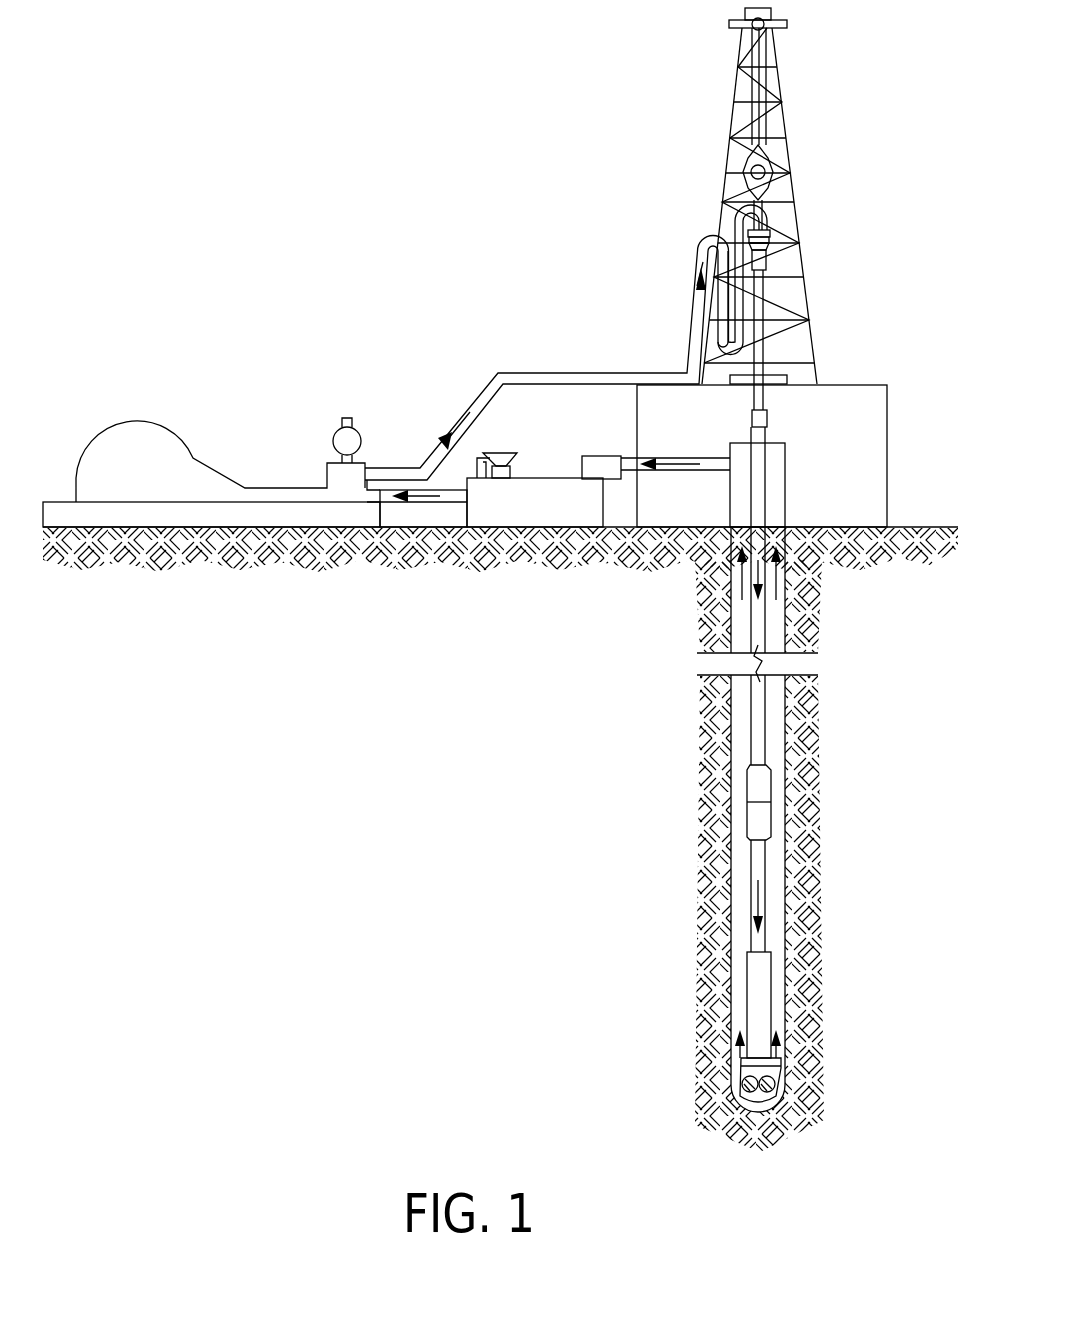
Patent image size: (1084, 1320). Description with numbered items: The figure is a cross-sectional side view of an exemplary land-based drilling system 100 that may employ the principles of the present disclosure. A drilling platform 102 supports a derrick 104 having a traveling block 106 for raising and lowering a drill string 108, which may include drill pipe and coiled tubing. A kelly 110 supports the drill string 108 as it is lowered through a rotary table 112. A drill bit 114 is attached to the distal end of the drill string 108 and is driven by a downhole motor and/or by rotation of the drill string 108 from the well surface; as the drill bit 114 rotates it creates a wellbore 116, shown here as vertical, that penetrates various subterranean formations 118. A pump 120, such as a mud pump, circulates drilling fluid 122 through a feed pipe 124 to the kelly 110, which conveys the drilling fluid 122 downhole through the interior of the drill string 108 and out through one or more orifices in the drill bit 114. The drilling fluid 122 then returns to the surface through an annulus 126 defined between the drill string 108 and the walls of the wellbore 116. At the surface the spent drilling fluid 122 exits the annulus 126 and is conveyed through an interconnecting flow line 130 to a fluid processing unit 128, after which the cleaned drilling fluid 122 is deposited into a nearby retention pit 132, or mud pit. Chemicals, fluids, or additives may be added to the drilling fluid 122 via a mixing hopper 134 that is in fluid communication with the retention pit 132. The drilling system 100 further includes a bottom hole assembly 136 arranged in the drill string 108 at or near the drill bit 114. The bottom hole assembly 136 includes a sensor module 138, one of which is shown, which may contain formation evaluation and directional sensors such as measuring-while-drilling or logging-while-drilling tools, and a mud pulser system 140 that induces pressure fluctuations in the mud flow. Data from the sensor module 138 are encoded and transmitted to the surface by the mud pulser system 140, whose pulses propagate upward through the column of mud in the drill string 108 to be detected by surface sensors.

The drilling system 100 is at (561, 128).
The drilling platform 102 is at (889, 406).
The derrick 104 is at (795, 110).
The traveling block 106 is at (775, 160).
The drill string 108 is at (761, 629).
The kelly 110 is at (764, 290).
The rotary table 112 is at (790, 381).
The drill bit 114 is at (781, 1082).
The wellbore 116 is at (789, 718).
The subterranean formations 118 is at (565, 727).
The pump 120 is at (155, 470).
The drilling fluid 122 is at (396, 468).
The feed pipe 124 is at (524, 372).
The annulus 126 is at (777, 874).
The fluid processing unit 128 is at (604, 456).
The flow line 130 is at (708, 472).
The retention pit 132 is at (562, 513).
The mixing hopper 134 is at (507, 452).
The bottom hole assembly 136 is at (685, 768).
The sensor module 138 is at (760, 945).
The mud pulser system 140 is at (760, 785).